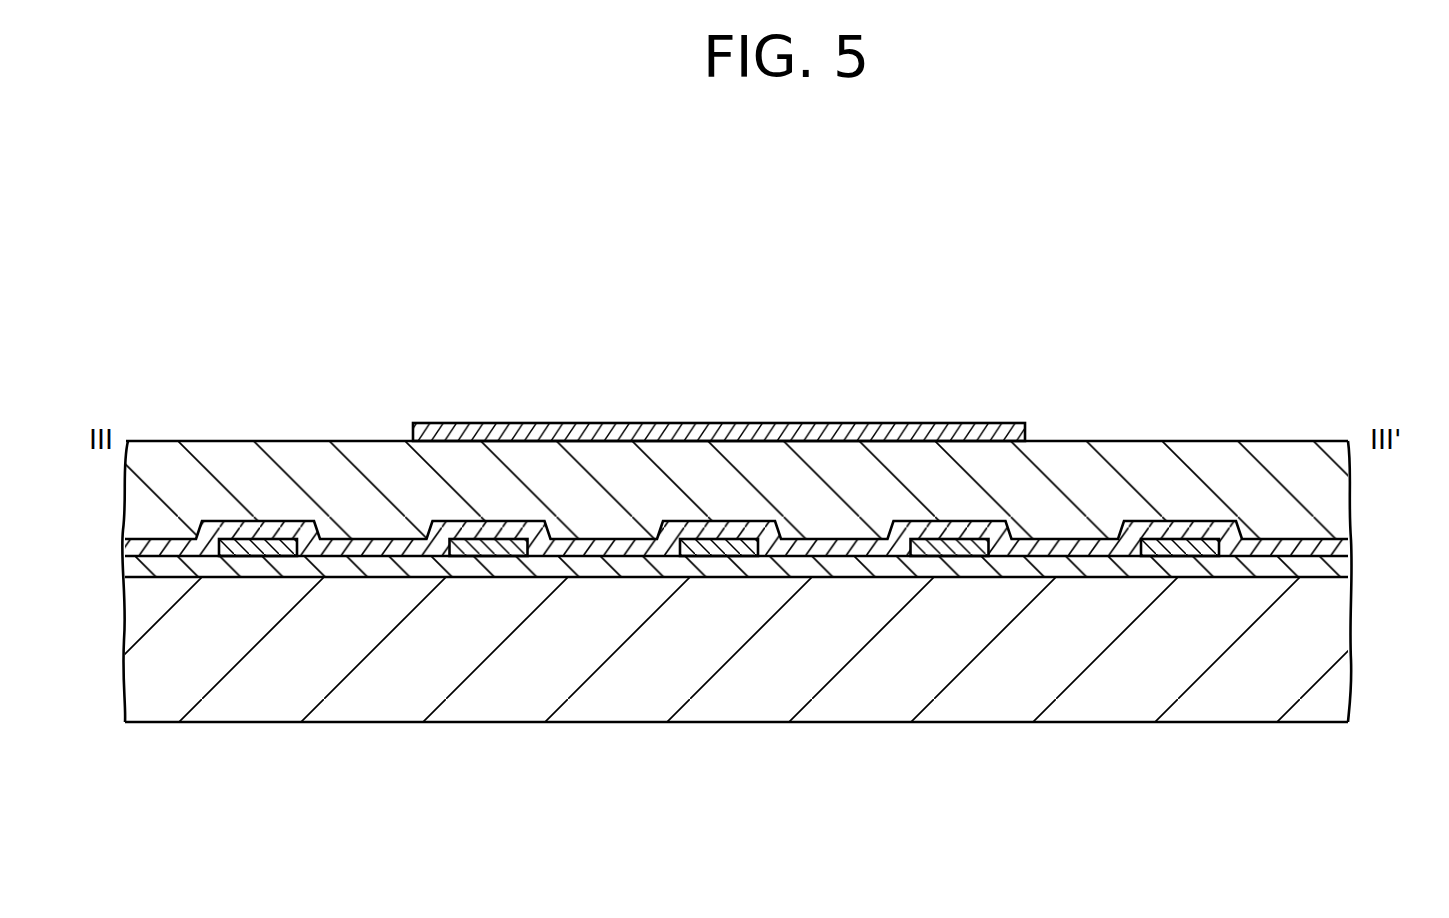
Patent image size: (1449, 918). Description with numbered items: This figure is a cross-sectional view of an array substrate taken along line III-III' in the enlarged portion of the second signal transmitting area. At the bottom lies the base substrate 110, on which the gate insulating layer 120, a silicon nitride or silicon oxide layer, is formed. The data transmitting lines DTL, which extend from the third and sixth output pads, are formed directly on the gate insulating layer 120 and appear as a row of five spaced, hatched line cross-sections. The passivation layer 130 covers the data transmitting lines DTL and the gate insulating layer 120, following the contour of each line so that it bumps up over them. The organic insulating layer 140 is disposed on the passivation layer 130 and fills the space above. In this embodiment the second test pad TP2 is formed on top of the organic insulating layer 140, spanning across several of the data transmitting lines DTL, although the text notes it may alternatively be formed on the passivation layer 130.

The organic insulating layer 140 is at (1332, 488).
The passivation layer 130 is at (1333, 542).
The gate insulating layer 120 is at (1332, 568).
The base substrate 110 is at (1332, 627).
The second test pad TP2 is at (953, 422).
The data transmitting lines DTL is at (480, 545).